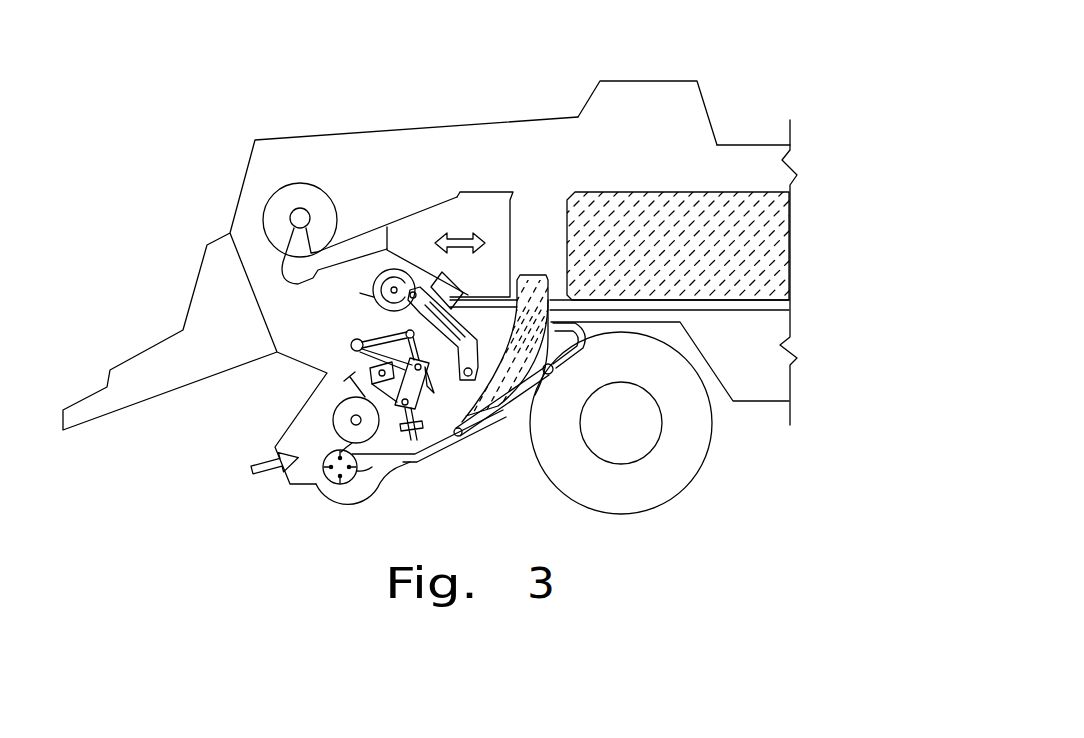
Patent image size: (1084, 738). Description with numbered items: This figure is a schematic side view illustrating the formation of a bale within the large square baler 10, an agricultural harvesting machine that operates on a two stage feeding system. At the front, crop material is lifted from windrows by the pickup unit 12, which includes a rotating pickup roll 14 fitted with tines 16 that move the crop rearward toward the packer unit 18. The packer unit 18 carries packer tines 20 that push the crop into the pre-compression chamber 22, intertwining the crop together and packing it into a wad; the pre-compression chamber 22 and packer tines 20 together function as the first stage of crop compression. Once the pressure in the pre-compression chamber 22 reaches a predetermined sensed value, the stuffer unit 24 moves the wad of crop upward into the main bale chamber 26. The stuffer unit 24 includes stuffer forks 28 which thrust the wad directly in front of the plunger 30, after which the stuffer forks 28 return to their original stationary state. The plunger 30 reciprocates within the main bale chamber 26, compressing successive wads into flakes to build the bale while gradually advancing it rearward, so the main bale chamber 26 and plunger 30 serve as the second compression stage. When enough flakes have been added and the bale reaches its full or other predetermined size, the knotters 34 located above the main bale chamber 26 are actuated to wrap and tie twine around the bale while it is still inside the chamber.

The large square baler 10 is at (226, 147).
The pickup unit 12 is at (331, 505).
The pickup roll 14 is at (323, 485).
The tines 16 is at (322, 466).
The packer unit 18 is at (355, 361).
The packer tines 20 is at (413, 448).
The pre-compression chamber 22 is at (438, 430).
The stuffer unit 24 is at (362, 297).
The main bale chamber 26 is at (552, 243).
The stuffer forks 28 is at (488, 400).
The plunger 30 is at (485, 192).
The knotters 34 is at (652, 81).